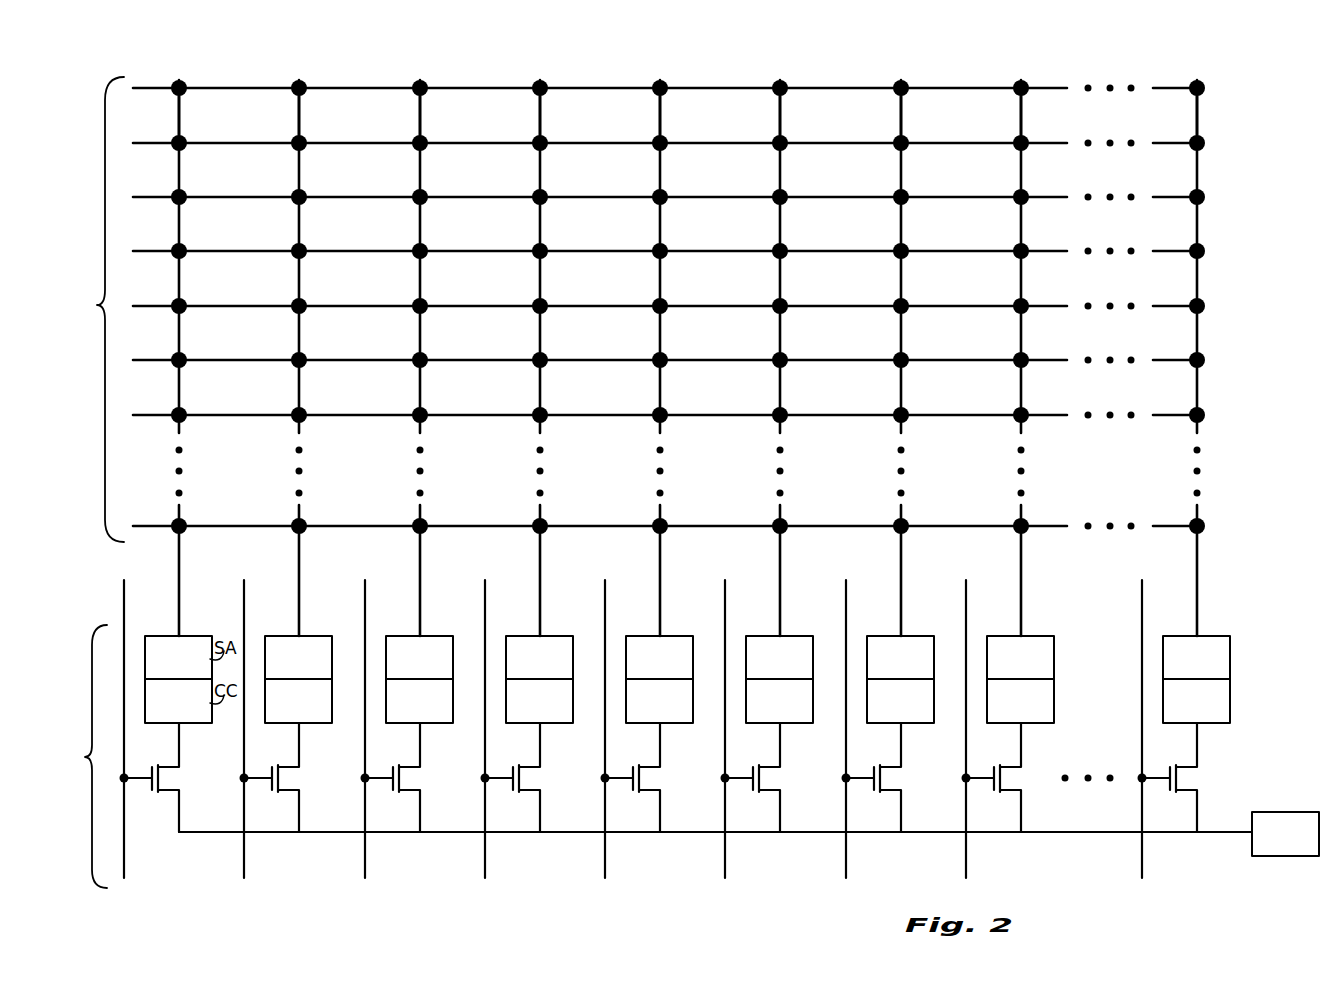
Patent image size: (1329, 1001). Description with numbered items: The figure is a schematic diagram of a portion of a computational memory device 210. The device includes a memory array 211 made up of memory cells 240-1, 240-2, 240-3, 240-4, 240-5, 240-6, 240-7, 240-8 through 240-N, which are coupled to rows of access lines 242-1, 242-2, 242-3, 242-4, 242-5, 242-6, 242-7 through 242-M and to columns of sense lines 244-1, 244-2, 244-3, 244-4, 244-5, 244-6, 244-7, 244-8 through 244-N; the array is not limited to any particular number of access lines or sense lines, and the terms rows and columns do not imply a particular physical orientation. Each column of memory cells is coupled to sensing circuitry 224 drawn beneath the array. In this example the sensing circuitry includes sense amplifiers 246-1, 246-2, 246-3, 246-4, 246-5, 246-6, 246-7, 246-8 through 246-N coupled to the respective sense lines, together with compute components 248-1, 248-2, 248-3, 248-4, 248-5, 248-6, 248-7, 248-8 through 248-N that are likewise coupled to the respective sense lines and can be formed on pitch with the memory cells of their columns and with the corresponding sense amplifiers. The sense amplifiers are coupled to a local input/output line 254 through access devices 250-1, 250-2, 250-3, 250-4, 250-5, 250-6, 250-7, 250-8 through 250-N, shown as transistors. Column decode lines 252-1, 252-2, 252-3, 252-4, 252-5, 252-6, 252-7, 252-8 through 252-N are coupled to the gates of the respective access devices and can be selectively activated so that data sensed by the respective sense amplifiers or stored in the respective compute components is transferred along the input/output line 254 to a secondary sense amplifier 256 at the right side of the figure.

The computational memory device 210 is at (141, 49).
The memory array 211 is at (94, 309).
The sensing circuitry 224 is at (79, 756).
The memory cell 240-1 is at (178, 81).
The memory cell 240-2 is at (298, 81).
The memory cell 240-3 is at (419, 81).
The memory cell 240-4 is at (539, 81).
The memory cell 240-5 is at (659, 81).
The memory cell 240-6 is at (779, 81).
The memory cell 240-7 is at (900, 81).
The memory cell 240-8 is at (1020, 81).
The memory cell 240-N is at (1196, 81).
The access line 242-1 is at (225, 94).
The access line 242-2 is at (225, 149).
The access line 242-3 is at (225, 203).
The access line 242-4 is at (225, 257).
The access line 242-5 is at (225, 312).
The access line 242-6 is at (225, 366).
The access line 242-7 is at (225, 421).
The access line 242-M is at (225, 532).
The sense line 244-1 is at (179, 114).
The sense line 244-2 is at (299, 114).
The sense line 244-3 is at (420, 114).
The sense line 244-4 is at (540, 114).
The sense line 244-5 is at (660, 114).
The sense line 244-6 is at (780, 114).
The sense line 244-7 is at (901, 114).
The sense line 244-8 is at (1021, 114).
The sense line 244-N is at (1197, 114).
The sense amplifier 246-1 is at (178, 657).
The sense amplifier 246-2 is at (298, 657).
The sense amplifier 246-3 is at (419, 657).
The sense amplifier 246-4 is at (539, 657).
The sense amplifier 246-5 is at (659, 657).
The sense amplifier 246-6 is at (779, 657).
The sense amplifier 246-7 is at (900, 657).
The sense amplifier 246-8 is at (1020, 657).
The sense amplifier 246-N is at (1196, 657).
The compute component 248-1 is at (178, 701).
The compute component 248-2 is at (298, 701).
The compute component 248-3 is at (419, 701).
The compute component 248-4 is at (539, 701).
The compute component 248-5 is at (659, 701).
The compute component 248-6 is at (779, 701).
The compute component 248-7 is at (900, 701).
The compute component 248-8 is at (1020, 701).
The compute component 248-N is at (1196, 701).
The access device 250-1 is at (173, 778).
The access device 250-2 is at (293, 778).
The access device 250-3 is at (414, 778).
The access device 250-4 is at (534, 778).
The access device 250-5 is at (654, 778).
The access device 250-6 is at (774, 778).
The access device 250-7 is at (895, 778).
The access device 250-8 is at (1015, 778).
The access device 250-N is at (1191, 778).
The column decode line 252-1 is at (124, 862).
The column decode line 252-2 is at (244, 862).
The column decode line 252-3 is at (365, 862).
The column decode line 252-4 is at (485, 862).
The column decode line 252-5 is at (605, 862).
The column decode line 252-6 is at (725, 862).
The column decode line 252-7 is at (846, 862).
The column decode line 252-8 is at (966, 862).
The column decode line 252-N is at (1142, 862).
The input/output (I/O) line 254 is at (204, 832).
The secondary sense amplifier 256 is at (1278, 812).